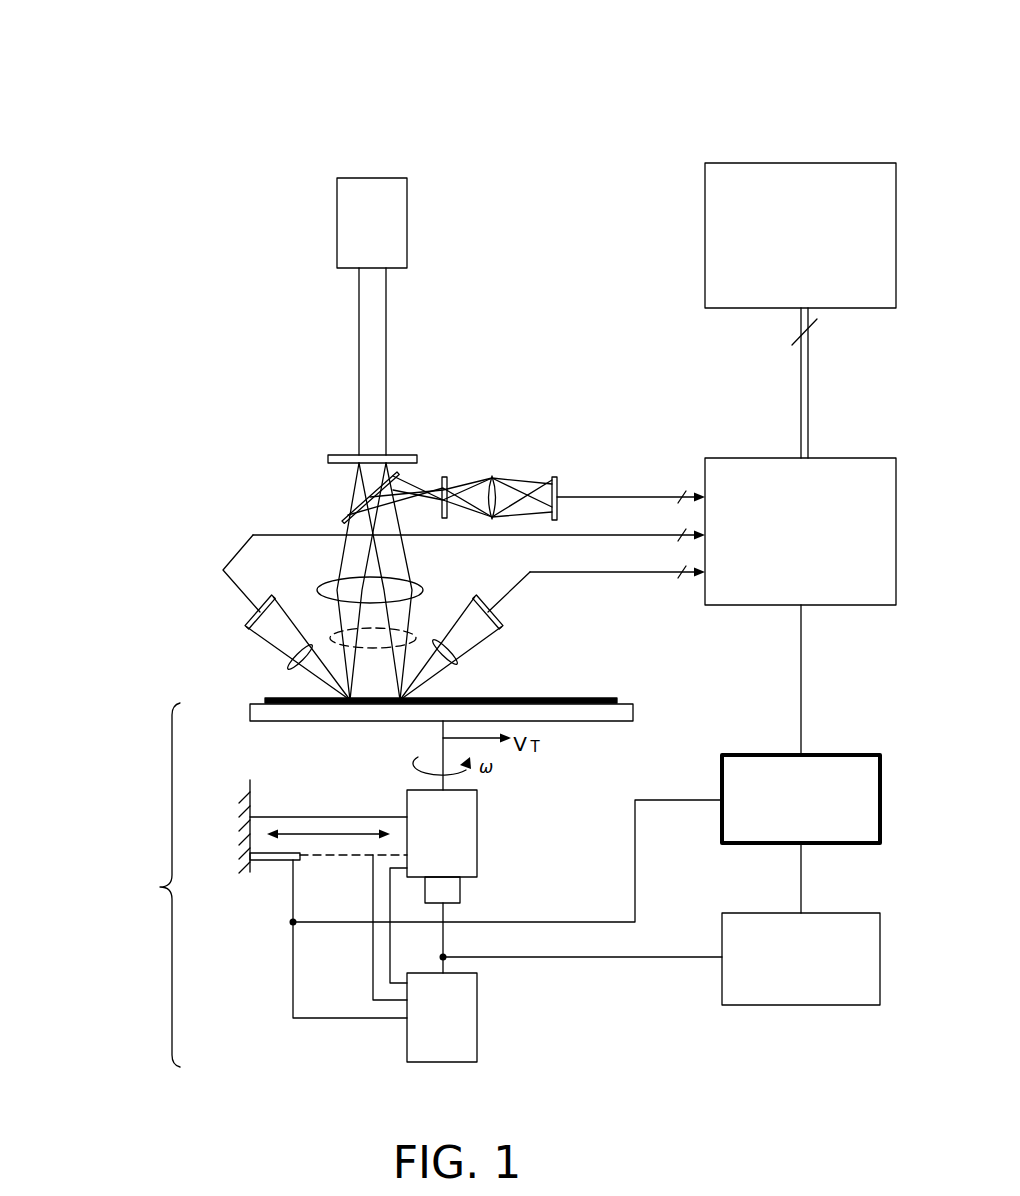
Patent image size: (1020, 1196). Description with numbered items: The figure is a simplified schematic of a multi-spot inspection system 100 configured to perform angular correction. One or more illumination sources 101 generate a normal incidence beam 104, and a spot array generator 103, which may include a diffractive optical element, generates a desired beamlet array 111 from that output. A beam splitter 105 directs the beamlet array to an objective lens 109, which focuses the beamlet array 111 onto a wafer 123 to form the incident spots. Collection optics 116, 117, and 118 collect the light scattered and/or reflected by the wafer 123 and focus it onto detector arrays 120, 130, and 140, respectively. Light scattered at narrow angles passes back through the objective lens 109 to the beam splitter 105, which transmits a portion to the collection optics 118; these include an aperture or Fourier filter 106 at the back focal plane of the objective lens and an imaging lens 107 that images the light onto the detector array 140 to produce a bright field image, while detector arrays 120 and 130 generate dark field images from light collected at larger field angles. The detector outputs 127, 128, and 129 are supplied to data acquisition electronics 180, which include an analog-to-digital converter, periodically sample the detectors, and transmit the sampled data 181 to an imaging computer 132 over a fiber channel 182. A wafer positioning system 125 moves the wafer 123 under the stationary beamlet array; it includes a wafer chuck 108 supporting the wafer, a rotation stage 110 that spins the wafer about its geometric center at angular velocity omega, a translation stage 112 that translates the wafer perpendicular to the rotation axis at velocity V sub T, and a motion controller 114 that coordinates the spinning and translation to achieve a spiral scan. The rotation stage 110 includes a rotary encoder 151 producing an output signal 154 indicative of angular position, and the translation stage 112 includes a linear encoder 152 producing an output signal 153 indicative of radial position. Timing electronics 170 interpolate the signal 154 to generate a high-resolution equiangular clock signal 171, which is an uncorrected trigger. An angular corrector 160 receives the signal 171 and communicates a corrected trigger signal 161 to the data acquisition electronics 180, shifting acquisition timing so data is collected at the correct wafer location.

The multi-spot inspection system 100 is at (282, 66).
The illumination source 101 is at (359, 235).
The spot array generator 103 is at (328, 460).
The normal incidence beam 104 is at (359, 303).
The beam splitter 105 is at (342, 521).
The aperture or Fourier filter 106 is at (445, 477).
The imaging lens 107 is at (493, 477).
The wafer chuck 108 is at (250, 711).
The objective lens 109 is at (425, 588).
The rotation stage 110 is at (429, 842).
The beamlet array 111 is at (336, 640).
The translation stage 112 is at (285, 815).
The motion controller 114 is at (429, 1026).
The collection optics 116 is at (290, 667).
The collection optics 117 is at (460, 661).
The collection optics 118 is at (517, 437).
The detector array 120 is at (245, 626).
The wafer 123 is at (607, 698).
The wafer positioning system 125 is at (158, 889).
The output 127 is at (600, 485).
The output 128 is at (642, 523).
The output 129 is at (600, 580).
The detector array 130 is at (505, 622).
The imaging computer 132 is at (787, 269).
The detector array 140 is at (553, 477).
The rotary encoder 151 is at (462, 891).
The linear encoder 152 is at (263, 862).
The output signal 153 is at (555, 905).
The output signal 154 is at (555, 968).
The angular corrector 160 is at (787, 832).
The corrected trigger signal 161 is at (787, 702).
The timing electronics 170 is at (788, 991).
The signal 171 is at (786, 864).
The data acquisition electronics 180 is at (787, 577).
The sampled data 181 is at (787, 414).
The fiber channel 182 is at (811, 370).